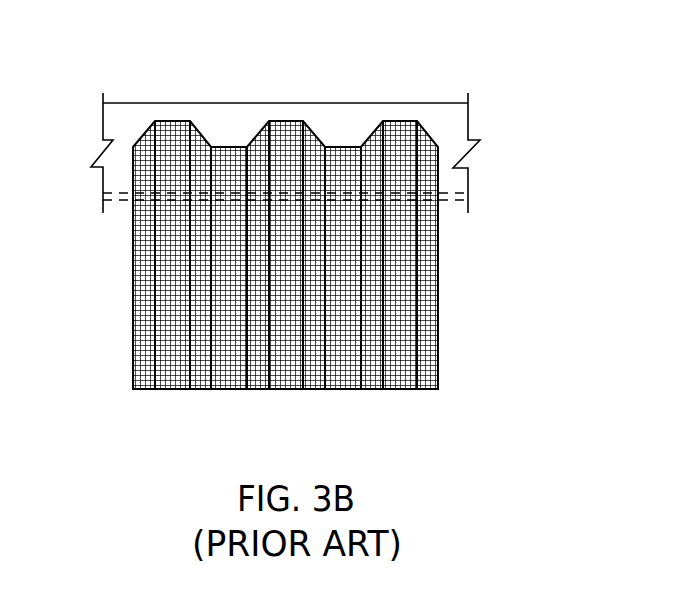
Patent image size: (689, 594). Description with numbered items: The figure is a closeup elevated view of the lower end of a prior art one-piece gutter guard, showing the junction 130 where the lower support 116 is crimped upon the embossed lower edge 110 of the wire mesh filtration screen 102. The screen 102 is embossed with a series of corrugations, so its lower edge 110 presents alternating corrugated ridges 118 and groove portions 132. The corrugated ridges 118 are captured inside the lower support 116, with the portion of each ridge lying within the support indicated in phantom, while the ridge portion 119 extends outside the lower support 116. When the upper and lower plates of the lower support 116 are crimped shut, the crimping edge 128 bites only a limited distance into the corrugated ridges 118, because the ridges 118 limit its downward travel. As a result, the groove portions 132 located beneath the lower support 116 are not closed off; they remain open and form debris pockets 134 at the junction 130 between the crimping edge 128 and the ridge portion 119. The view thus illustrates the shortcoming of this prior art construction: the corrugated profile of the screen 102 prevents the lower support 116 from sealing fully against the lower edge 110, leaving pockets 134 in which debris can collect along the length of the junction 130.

The wire mesh filtration screen 102 is at (340, 390).
The lower edge 110 is at (232, 144).
The lower support 116 is at (453, 130).
The corrugated ridge 118 is at (172, 136).
The ridge portion outside lower support 119 is at (170, 323).
The crimping edge 128 is at (117, 202).
The junction 130 is at (400, 206).
The groove portions 132 is at (340, 165).
The debris pockets 134 is at (344, 250).